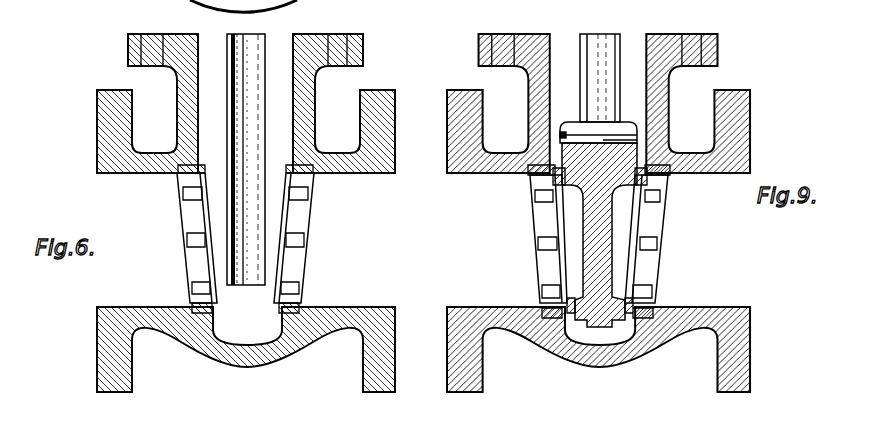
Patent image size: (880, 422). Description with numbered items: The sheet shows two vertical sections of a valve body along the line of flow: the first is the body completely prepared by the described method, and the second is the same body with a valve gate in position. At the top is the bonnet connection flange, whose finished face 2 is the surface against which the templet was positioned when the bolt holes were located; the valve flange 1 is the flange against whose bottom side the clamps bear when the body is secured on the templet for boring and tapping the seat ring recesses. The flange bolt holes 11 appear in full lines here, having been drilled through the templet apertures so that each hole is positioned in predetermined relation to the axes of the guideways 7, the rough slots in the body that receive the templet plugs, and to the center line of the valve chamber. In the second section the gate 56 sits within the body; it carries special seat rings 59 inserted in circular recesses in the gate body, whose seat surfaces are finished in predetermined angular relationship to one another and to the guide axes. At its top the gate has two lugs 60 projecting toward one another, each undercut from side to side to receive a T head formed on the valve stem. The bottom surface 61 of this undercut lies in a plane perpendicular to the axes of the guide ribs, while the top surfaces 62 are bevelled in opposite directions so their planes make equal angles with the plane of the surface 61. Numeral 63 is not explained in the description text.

In FIG. 6, the valve flange 1 is at (363, 61).
In FIG. 9, the valve flange 1 is at (717, 50).
In FIG. 6, the finished face of the bonnet connection flange 2 is at (186, 34).
In FIG. 9, the finished face of the bonnet connection flange 2 is at (660, 35).
In FIG. 6, the rough slots or guideways 7 is at (243, 88).
In FIG. 9, the rough slots or guideways 7 is at (600, 43).
In FIG. 6, the flange bolt holes 11 is at (128, 45).
In FIG. 9, the flange bolt holes 11 is at (492, 50).
In FIG. 9, the gate 56 is at (607, 230).
In FIG. 6, the seat rings 59 is at (245, 239).
In FIG. 9, the seat rings 59 is at (540, 183).
In FIG. 9, the lugs 60 is at (623, 125).
In FIG. 9, the bottom surface 61 is at (637, 137).
In FIG. 9, the top surfaces 62 is at (563, 137).
In FIG. 6, the stem sleeve 63 is at (217, 133).